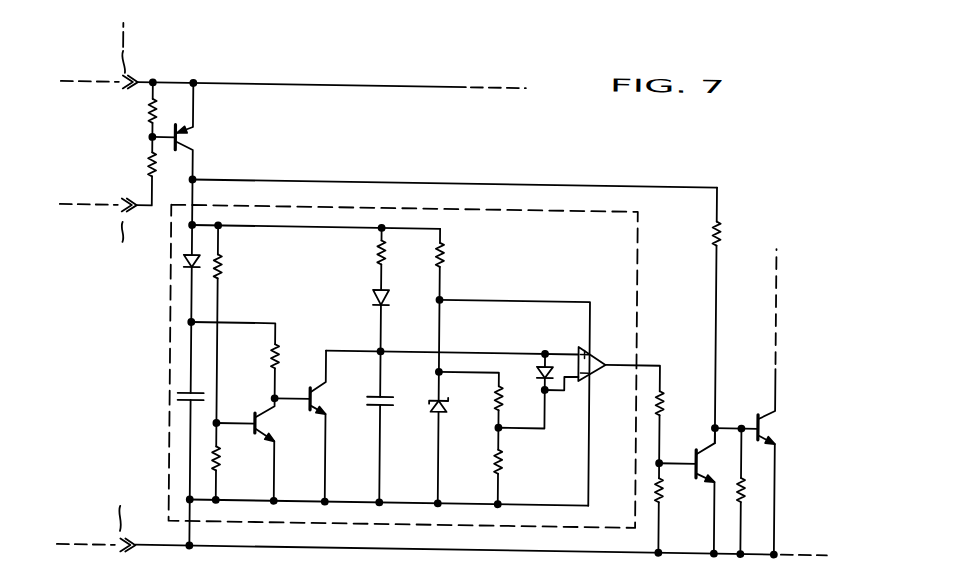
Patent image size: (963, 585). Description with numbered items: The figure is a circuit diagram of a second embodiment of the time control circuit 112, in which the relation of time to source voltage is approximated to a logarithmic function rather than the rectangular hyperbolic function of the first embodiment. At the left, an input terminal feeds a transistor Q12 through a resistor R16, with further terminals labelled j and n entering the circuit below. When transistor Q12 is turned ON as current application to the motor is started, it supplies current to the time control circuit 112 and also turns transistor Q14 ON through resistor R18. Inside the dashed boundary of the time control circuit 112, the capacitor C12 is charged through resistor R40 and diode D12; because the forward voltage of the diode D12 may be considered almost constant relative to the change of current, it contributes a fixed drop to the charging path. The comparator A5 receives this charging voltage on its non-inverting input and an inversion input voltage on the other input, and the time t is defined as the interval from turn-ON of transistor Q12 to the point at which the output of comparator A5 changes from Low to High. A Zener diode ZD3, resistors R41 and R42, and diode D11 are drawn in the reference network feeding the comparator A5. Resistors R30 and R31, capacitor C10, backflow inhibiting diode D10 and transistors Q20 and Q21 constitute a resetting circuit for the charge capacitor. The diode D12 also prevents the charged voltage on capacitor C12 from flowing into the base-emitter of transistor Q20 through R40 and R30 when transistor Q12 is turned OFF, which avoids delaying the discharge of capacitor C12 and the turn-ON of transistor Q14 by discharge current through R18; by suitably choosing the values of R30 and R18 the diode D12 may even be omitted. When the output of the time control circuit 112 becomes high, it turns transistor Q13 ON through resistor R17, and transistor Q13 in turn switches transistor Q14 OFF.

The resistor R16 is at (148, 166).
The transistor Q12 is at (183, 137).
The time control circuit 112 is at (171, 361).
The backflow inhibiting diode D10 is at (186, 260).
The capacitor C10 is at (179, 398).
The resistor R30 is at (224, 264).
The resistor R31 is at (282, 349).
The transistor Q20 is at (266, 414).
The transistor Q21 is at (326, 414).
The resistor R40 is at (376, 250).
The diode D12 is at (376, 294).
The capacitor C12 is at (371, 392).
The Zener diode ZD3 is at (438, 408).
The resistor R41 is at (495, 397).
The resistor R42 is at (506, 452).
The diode D11 is at (541, 367).
The comparator A5 is at (595, 371).
The resistor R17 is at (664, 387).
The resistor R18 is at (723, 222).
The transistor Q13 is at (712, 479).
The transistor Q14 is at (767, 419).
The node j is at (119, 245).
The node n is at (115, 506).